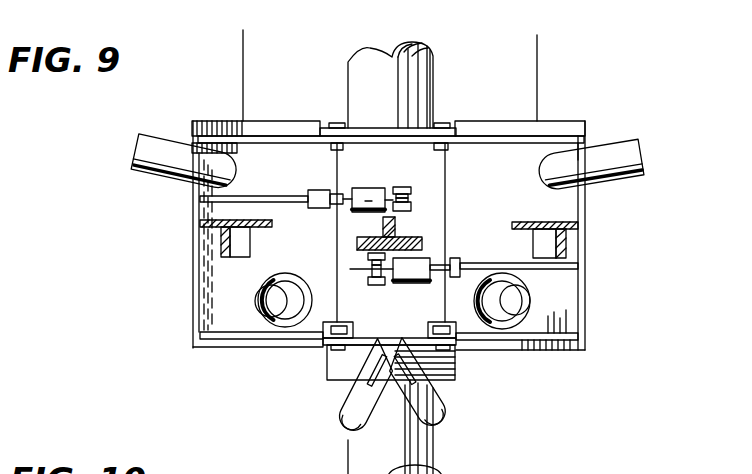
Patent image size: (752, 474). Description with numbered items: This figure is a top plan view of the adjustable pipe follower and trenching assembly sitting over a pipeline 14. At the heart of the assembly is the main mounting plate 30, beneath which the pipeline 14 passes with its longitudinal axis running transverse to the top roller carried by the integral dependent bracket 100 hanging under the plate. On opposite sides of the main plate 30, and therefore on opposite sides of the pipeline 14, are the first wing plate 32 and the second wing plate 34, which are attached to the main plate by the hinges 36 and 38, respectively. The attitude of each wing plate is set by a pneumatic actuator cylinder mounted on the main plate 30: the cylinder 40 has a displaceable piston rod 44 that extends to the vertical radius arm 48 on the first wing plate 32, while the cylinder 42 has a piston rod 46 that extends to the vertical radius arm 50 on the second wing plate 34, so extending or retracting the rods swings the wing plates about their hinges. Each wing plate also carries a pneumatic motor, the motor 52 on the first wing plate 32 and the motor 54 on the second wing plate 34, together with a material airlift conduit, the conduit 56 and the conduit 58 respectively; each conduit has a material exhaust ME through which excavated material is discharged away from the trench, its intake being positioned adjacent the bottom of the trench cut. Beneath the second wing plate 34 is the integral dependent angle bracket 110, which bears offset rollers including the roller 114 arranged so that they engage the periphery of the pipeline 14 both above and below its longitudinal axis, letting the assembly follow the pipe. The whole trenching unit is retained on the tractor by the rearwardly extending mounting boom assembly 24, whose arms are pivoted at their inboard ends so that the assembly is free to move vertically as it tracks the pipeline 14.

The pipeline 14 is at (437, 458).
The mounting boom assembly 24 is at (341, 416).
The main mounting plate 30 is at (418, 162).
The first wing plate 32 is at (523, 178).
The second wing plate 34 is at (284, 174).
The hinge 36 is at (441, 124).
The hinge 38 is at (337, 124).
The pneumatic actuator cylinder 40 is at (416, 278).
The pneumatic actuator cylinder 42 is at (368, 206).
The piston rod 44 is at (436, 276).
The piston rod 46 is at (346, 198).
The vertical radius arm 48 is at (490, 263).
The vertical radius arm 50 is at (280, 203).
The pneumatic motor 52 is at (524, 307).
The pneumatic motor 54 is at (266, 304).
The material airlift conduit 56 is at (597, 186).
The material airlift conduit 58 is at (170, 181).
The dependent bracket 100 is at (398, 230).
The dependent angle bracket 110 is at (223, 237).
The offset roller 114 is at (565, 248).
The material exhaust ME is at (133, 153).